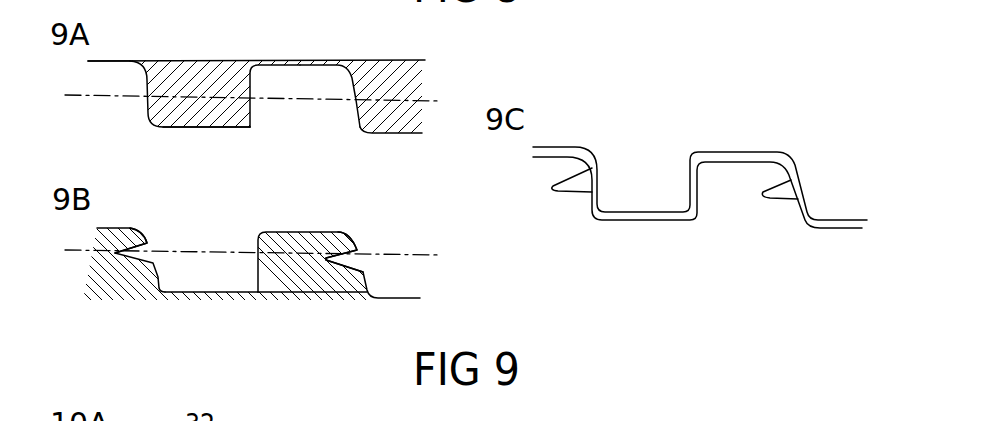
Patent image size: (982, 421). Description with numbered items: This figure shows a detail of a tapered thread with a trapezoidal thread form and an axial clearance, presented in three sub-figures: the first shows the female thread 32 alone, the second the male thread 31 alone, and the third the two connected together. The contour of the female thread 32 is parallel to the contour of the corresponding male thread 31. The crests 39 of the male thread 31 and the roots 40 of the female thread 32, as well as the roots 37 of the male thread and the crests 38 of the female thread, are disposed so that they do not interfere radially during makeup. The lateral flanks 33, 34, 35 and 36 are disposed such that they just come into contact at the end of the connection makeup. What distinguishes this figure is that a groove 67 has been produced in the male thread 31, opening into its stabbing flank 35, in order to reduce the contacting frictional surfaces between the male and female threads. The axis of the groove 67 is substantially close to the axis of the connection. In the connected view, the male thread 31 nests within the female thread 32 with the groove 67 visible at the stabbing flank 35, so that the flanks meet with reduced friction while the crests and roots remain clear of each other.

The male thread 31 is at (128, 288).
The female thread 32 is at (208, 78).
The lateral flank 33 is at (247, 268).
The lateral flank 34 is at (250, 112).
The stabbing flank 35 is at (160, 272).
The lateral flank 36 is at (359, 112).
The root of the male thread 37 is at (210, 292).
The crest of the female thread 38 is at (230, 123).
The crest of the male thread 39 is at (280, 228).
The root of the female thread 40 is at (97, 63).
The groove 67 is at (353, 263).